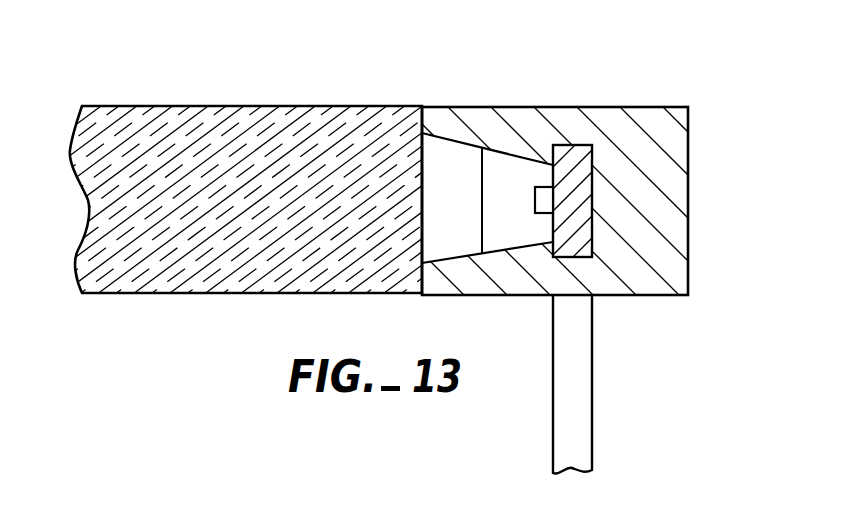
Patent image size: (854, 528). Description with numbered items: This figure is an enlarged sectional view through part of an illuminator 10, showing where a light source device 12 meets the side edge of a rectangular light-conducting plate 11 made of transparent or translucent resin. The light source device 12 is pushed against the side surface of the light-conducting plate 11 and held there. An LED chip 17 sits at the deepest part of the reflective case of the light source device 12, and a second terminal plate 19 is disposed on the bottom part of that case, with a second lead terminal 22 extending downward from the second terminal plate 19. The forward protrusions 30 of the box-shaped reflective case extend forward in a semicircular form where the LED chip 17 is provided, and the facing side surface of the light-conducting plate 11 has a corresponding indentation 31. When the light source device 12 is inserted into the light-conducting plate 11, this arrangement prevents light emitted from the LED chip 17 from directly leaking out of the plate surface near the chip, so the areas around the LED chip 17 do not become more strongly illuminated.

The illuminator 10 is at (427, 237).
The light-conducting plate 11 is at (245, 92).
The light source device 12 is at (698, 165).
The LED chip 17 is at (535, 192).
The second terminal plate 19 is at (573, 157).
The second lead terminal 22 is at (593, 340).
The forward protrusion 30 is at (440, 117).
The indentation 31 is at (427, 170).